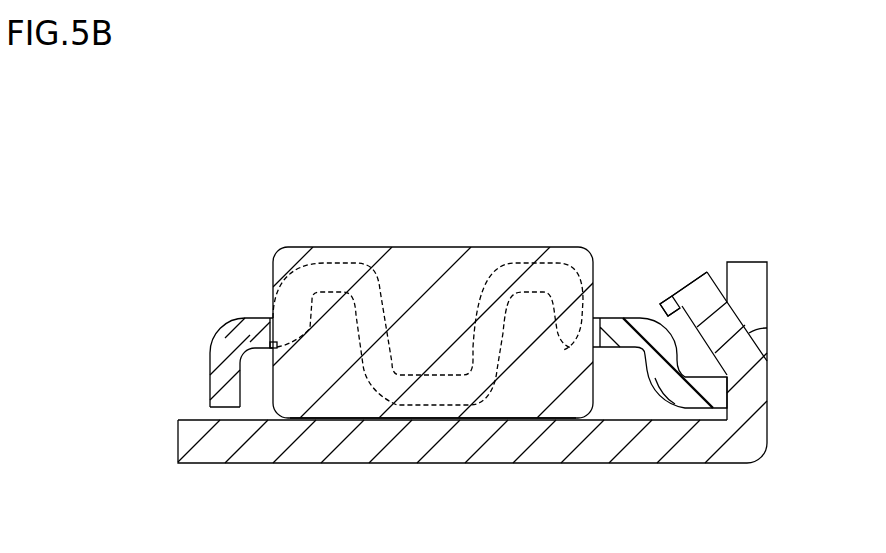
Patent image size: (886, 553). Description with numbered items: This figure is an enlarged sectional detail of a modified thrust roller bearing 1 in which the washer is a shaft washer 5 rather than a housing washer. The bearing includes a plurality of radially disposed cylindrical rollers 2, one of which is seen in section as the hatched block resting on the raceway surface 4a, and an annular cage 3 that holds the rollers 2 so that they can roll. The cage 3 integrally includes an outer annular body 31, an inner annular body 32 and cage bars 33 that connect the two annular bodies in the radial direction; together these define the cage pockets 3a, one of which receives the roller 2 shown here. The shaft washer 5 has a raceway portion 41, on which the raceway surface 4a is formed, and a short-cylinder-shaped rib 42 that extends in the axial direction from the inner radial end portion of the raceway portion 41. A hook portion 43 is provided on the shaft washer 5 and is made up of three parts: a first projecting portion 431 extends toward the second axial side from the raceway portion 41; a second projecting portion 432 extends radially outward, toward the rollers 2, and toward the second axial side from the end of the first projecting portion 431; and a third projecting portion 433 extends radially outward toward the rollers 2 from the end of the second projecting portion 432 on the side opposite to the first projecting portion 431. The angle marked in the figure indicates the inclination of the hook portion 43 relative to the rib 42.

The thrust roller bearing 1 is at (525, 162).
The cylindrical roller 2 is at (398, 257).
The cage 3 is at (426, 398).
The outer annular body 31 is at (237, 337).
The inner annular body 32 is at (622, 340).
The cage bar 33 is at (330, 270).
The cage pocket 3a is at (278, 347).
The raceway surface 4a is at (389, 415).
The shaft washer 5 is at (510, 362).
The raceway portion 41 is at (437, 452).
The rib 42 is at (768, 262).
The hook portion 43 is at (687, 287).
The first projecting portion 431 is at (771, 392).
The second projecting portion 432 is at (697, 285).
The third projecting portion 433 is at (669, 300).